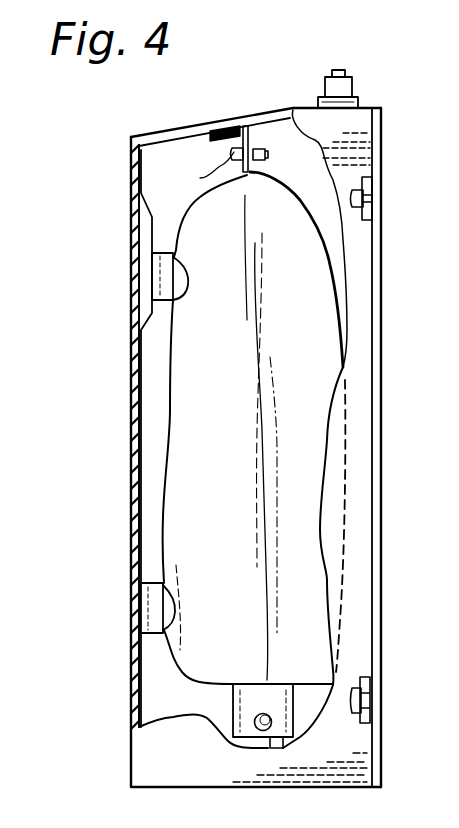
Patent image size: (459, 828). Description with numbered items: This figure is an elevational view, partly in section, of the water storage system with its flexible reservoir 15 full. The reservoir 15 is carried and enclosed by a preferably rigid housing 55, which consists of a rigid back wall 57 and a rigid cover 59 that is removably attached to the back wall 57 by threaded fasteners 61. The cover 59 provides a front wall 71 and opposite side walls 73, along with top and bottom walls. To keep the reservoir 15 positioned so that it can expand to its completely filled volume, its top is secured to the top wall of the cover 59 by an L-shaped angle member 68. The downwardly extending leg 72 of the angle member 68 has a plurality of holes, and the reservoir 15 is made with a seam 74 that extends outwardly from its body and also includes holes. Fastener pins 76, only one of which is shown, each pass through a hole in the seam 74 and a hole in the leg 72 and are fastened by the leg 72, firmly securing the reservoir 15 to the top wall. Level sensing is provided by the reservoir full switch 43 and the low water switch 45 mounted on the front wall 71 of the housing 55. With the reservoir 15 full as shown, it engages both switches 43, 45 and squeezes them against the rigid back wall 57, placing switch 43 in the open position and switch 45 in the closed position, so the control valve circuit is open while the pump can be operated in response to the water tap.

The reservoir 15 is at (192, 475).
The reservoir full switch 43 is at (163, 275).
The low water switch 45 is at (147, 610).
The housing 55 is at (132, 135).
The back wall 57 is at (384, 137).
The cover 59 is at (192, 97).
The threaded fasteners 61 is at (358, 195).
The L-shaped angle member 68 is at (244, 125).
The front wall 71 is at (130, 395).
The downwardly extending leg 72 is at (265, 142).
The side walls 73 is at (357, 529).
The seam 74 is at (248, 175).
The fastener pins 76 is at (200, 173).